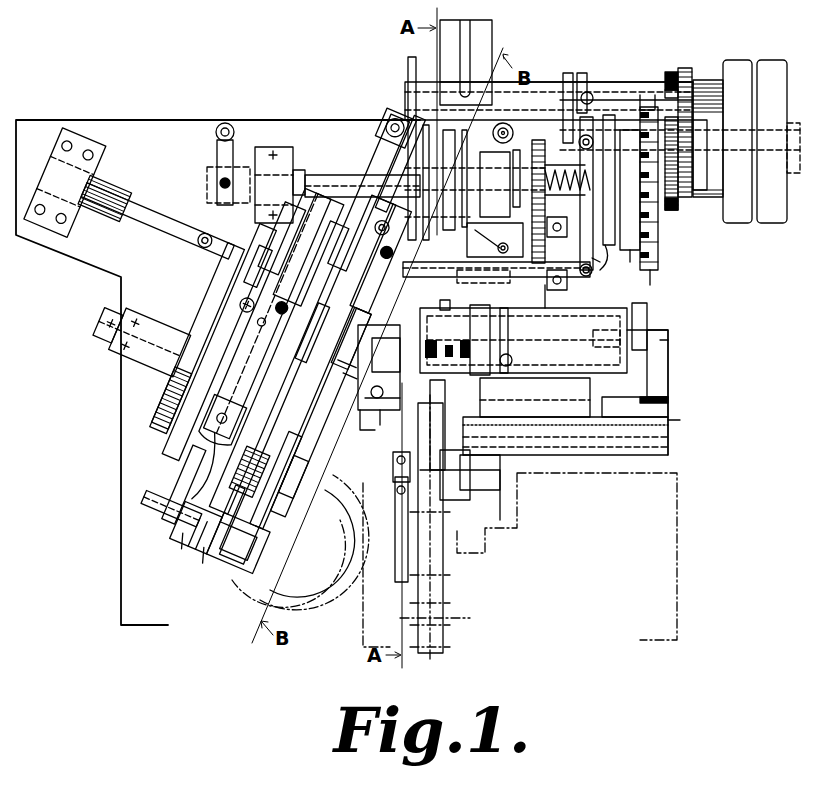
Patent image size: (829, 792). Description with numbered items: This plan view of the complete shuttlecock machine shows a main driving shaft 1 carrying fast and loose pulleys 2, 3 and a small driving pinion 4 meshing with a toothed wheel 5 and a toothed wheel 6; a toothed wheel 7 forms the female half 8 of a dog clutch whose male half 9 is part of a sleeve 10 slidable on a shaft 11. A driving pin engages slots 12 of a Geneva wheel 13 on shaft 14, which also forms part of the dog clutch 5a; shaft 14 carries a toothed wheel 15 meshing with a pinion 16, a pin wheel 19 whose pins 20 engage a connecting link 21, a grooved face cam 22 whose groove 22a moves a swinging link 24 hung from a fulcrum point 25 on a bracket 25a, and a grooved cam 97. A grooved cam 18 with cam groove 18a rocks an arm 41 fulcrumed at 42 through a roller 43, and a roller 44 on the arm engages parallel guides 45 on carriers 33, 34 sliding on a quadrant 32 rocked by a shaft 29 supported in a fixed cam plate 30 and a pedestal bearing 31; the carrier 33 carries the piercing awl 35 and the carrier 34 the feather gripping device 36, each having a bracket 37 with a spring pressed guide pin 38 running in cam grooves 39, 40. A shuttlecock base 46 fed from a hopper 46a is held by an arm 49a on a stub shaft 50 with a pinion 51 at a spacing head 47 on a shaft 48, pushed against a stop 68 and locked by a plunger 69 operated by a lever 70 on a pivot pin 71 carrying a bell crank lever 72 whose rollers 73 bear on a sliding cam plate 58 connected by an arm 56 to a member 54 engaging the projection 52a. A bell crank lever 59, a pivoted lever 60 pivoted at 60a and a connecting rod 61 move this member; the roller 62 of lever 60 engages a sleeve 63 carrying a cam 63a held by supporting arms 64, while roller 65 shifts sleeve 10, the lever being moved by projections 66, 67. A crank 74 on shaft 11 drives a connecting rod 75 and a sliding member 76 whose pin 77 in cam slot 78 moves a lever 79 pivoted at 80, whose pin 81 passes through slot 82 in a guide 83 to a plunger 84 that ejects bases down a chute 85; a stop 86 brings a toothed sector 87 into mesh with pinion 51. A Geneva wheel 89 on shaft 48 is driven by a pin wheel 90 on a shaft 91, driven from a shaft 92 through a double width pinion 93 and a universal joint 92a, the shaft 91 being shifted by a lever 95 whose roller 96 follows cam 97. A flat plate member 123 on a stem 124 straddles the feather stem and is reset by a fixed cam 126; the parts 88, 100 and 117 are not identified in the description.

The main driving shaft 1 is at (787, 165).
The fast pulley 2 is at (738, 223).
The loose pulley 3 is at (768, 223).
The driving pinion 4 is at (720, 150).
The toothed wheel 5 is at (672, 210).
The dog clutch 5a is at (668, 210).
The toothed wheel 6 is at (672, 72).
The toothed wheel 7 is at (686, 68).
The female half of dog clutch 8 is at (668, 72).
The male half of dog clutch 9 is at (648, 95).
The sleeve 10 is at (640, 100).
The shaft 11 is at (540, 94).
The slots 12 is at (658, 258).
The Geneva wheel 13 is at (663, 281).
The shaft 14 is at (322, 185).
The toothed wheel 15 is at (537, 140).
The pinion 16 is at (561, 296).
The grooved cam 18 is at (471, 298).
The cam groove 18a is at (483, 247).
The pin wheel 19 is at (485, 138).
The pins 20 is at (483, 206).
The connecting link 21 is at (369, 336).
The grooved face cam 22 is at (369, 179).
The groove 22a is at (389, 180).
The swinging link 24 is at (382, 258).
The fulcrum point 25 is at (383, 222).
The bracket 25a is at (385, 128).
The shaft 29 is at (635, 395).
The fixed cam plate 30 is at (668, 360).
The pedestal bearing 31 is at (380, 425).
The rocking member or quadrant 32 is at (575, 405).
The carrier 33 is at (652, 363).
The carrier 34 is at (668, 448).
The piercing awl 35 is at (379, 336).
The feather gripping device 36 is at (396, 500).
The bracket 37 is at (680, 420).
The spring pressed guide pin 38 is at (698, 323).
The cam groove 39 is at (687, 337).
The cam groove 40 is at (665, 388).
The arm 41 is at (515, 340).
The fulcrum 42 is at (528, 118).
The pin or roller 43 is at (557, 217).
The roller 44 is at (610, 350).
The parallel guides 45 is at (490, 310).
The shuttlecock base 46 is at (290, 448).
The hopper 46a is at (240, 590).
The spacing head 47 is at (300, 470).
The shaft 48 is at (165, 320).
The arm 49a is at (305, 462).
The stub shaft 50 is at (268, 505).
The toothed pinion 51 is at (324, 397).
The projection 52a is at (384, 343).
The member 54 is at (369, 328).
The arm 56 is at (308, 249).
The sliding cam plate 58 is at (320, 350).
The bell crank lever 59 is at (291, 237).
The pivoted lever 60 is at (598, 278).
The pivot 60a is at (567, 171).
The connecting rod 61 is at (645, 302).
The depending pin or roller 62 is at (610, 160).
The sleeve 63 is at (607, 261).
The cam 63a is at (564, 267).
The depending supporting arms 64 is at (600, 118).
The depending pin or roller 65 is at (578, 74).
The projection 66 is at (621, 250).
The projection 67 is at (630, 261).
The stop 68 is at (322, 368).
The plunger 69 is at (356, 424).
The lever 70 is at (218, 300).
The pivot pin 71 is at (225, 280).
The bell crank lever 72 is at (242, 238).
The rollers 73 is at (270, 250).
The crank 74 is at (408, 67).
The connecting rod 75 is at (388, 118).
The sliding member 76 is at (198, 546).
The pin 77 is at (182, 547).
The cam slot 78 is at (190, 479).
The pivoted lever 79 is at (205, 442).
The pivotal point 80 is at (216, 418).
The depending pin 81 is at (182, 564).
The slot 82 is at (178, 530).
The guide 83 is at (125, 512).
The plunger 84 is at (207, 566).
The chute 85 is at (302, 605).
The stop 86 is at (253, 484).
The pivoted toothed sector 87 is at (246, 543).
The post 88 is at (580, 142).
The Geneva wheel 89 is at (180, 394).
The pin wheel 90 is at (280, 185).
The shaft 91 is at (152, 215).
The shaft 92 is at (205, 255).
The universal joint 92a is at (203, 232).
The double width pinion 93 is at (122, 192).
The lever 95 is at (217, 147).
The pin or roller 96 is at (220, 183).
The grooved cam 97 is at (240, 170).
The rod 100 is at (440, 590).
The post 117 is at (445, 412).
The flat plate member 123 is at (393, 466).
The stem 124 is at (490, 500).
The fixed cam 126 is at (500, 478).